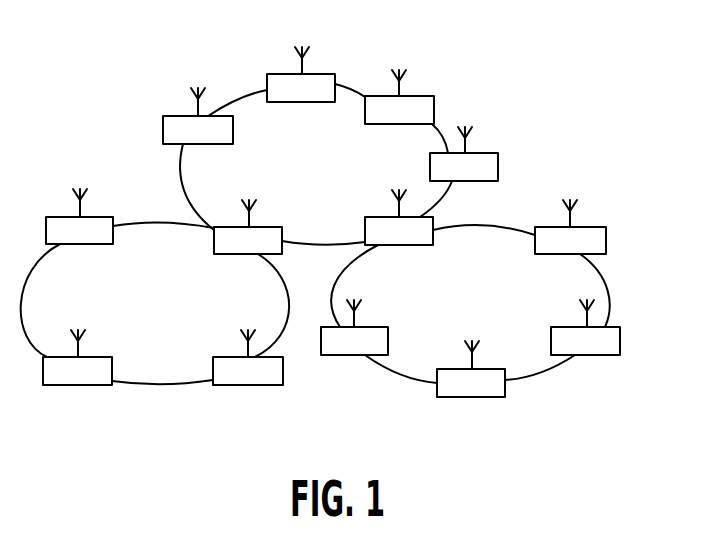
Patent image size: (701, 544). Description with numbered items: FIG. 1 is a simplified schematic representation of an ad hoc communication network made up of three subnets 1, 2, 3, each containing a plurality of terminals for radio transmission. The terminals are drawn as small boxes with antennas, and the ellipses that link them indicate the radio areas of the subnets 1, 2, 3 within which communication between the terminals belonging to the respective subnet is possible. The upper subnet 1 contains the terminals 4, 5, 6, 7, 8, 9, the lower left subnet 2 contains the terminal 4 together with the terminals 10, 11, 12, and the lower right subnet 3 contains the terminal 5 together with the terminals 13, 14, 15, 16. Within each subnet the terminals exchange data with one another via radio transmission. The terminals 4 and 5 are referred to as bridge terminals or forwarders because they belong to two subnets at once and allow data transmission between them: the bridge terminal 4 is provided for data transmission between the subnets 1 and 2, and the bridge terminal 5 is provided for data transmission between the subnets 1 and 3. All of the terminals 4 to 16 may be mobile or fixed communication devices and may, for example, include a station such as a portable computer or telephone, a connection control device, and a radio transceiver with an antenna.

The subnet 1 is at (255, 125).
The subnet 2 is at (155, 248).
The subnet 3 is at (513, 245).
The bridge terminal 4 is at (227, 240).
The bridge terminal 5 is at (415, 235).
The terminal 6 is at (490, 160).
The terminal 7 is at (424, 105).
The terminal 8 is at (322, 82).
The terminal 9 is at (172, 124).
The terminal 10 is at (60, 225).
The terminal 11 is at (75, 377).
The terminal 12 is at (243, 377).
The terminal 13 is at (340, 345).
The terminal 14 is at (472, 388).
The terminal 15 is at (610, 345).
The terminal 16 is at (590, 236).